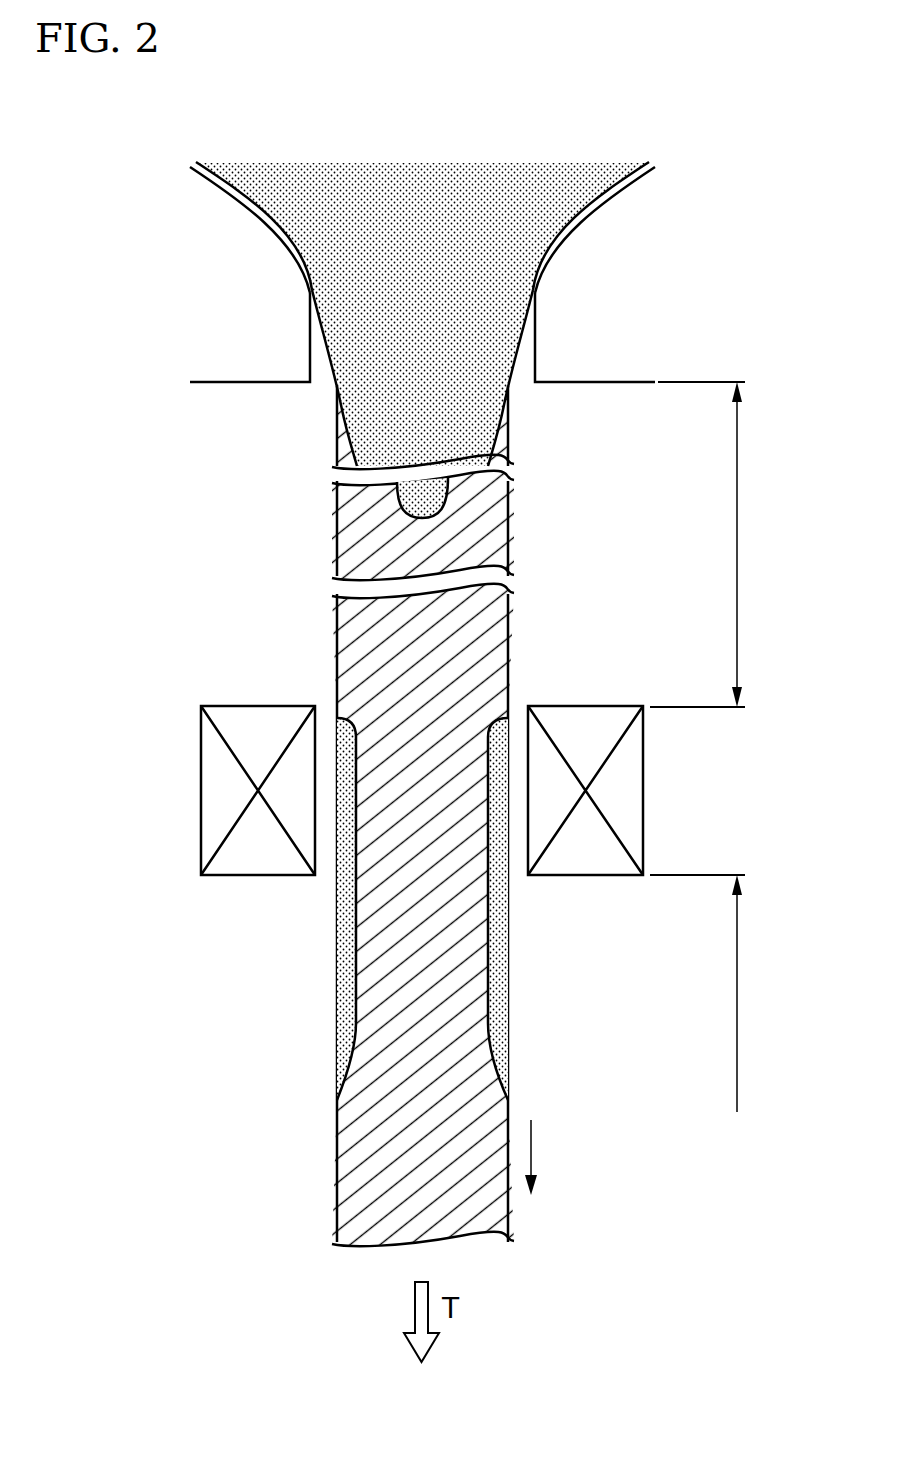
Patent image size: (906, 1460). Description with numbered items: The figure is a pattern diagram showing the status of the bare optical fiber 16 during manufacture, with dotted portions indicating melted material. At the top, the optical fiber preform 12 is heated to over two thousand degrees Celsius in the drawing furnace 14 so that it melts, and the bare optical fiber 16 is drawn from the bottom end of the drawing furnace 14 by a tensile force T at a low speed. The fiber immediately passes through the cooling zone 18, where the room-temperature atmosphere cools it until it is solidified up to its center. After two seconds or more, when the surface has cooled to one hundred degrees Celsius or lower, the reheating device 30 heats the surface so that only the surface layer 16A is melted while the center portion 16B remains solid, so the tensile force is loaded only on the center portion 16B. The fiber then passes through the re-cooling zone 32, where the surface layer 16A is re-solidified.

The optical fiber preform 12 is at (472, 203).
The drawing furnace 14 is at (232, 360).
The bare optical fiber 16 is at (337, 636).
The surface layer 16A is at (345, 876).
The center portion 16B is at (420, 888).
The cooling zone 18 is at (708, 544).
The reheating device 30 is at (217, 787).
The re-cooling zone 32 is at (708, 993).